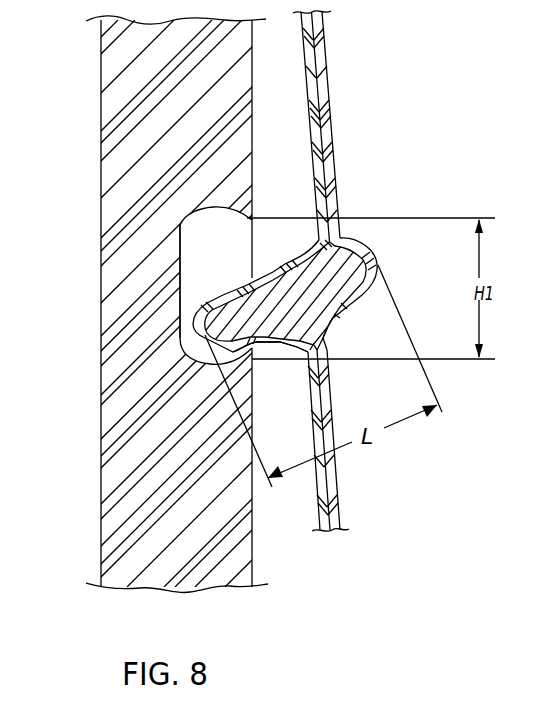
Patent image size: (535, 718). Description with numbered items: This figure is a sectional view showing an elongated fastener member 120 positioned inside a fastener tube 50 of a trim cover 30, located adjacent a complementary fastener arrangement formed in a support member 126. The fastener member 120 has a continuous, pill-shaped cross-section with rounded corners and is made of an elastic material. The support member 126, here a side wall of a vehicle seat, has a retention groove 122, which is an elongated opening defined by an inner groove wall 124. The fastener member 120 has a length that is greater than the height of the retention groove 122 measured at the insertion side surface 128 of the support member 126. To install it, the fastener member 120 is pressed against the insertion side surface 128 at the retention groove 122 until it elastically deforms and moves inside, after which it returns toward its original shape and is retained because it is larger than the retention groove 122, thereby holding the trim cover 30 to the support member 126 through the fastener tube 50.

The trim cover 30 is at (380, 78).
The fastener tube 50 is at (282, 350).
The fastener member 120 is at (355, 268).
The retention groove 122 is at (240, 242).
The inner groove wall 124 is at (180, 260).
The support member 126 is at (118, 403).
The insertion side surface 128 is at (252, 495).